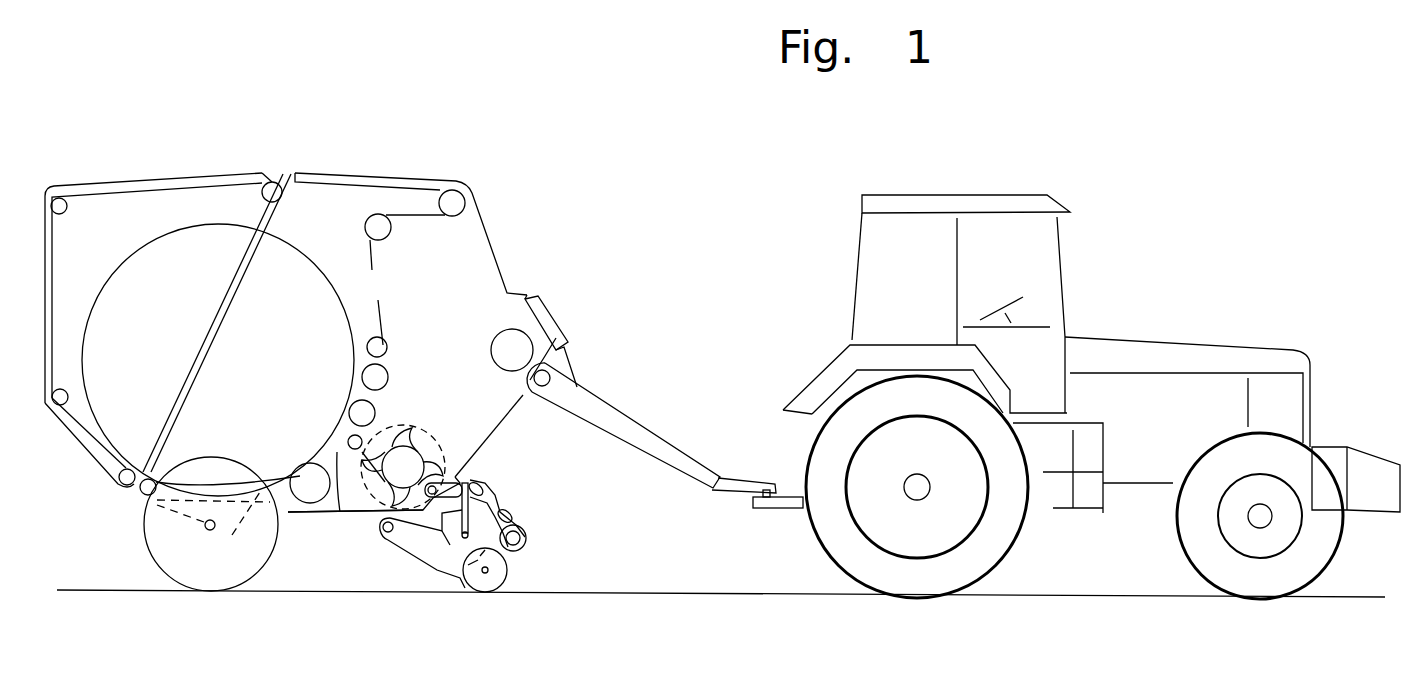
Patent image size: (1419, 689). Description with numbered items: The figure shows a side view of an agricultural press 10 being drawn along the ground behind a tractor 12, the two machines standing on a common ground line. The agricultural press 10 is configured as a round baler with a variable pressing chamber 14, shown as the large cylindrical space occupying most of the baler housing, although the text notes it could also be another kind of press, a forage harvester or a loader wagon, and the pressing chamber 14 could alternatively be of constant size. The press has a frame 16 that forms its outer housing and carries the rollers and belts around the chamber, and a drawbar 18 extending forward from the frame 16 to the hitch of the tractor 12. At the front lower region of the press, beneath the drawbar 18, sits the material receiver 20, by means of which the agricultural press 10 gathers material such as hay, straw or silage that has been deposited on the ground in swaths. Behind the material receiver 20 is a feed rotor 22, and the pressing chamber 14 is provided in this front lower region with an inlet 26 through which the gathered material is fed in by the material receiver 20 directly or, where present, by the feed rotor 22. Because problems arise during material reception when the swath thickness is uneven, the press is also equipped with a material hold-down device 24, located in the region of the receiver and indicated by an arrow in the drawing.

The agricultural press 10 is at (268, 112).
The tractor 12 is at (1224, 222).
The pressing chamber 14 is at (278, 368).
The frame 16 is at (490, 237).
The drawbar 18 is at (642, 428).
The material receiver 20 is at (438, 578).
The feed rotor 22 is at (338, 514).
The material hold-down device 24 is at (548, 529).
The inlet 26 is at (385, 478).